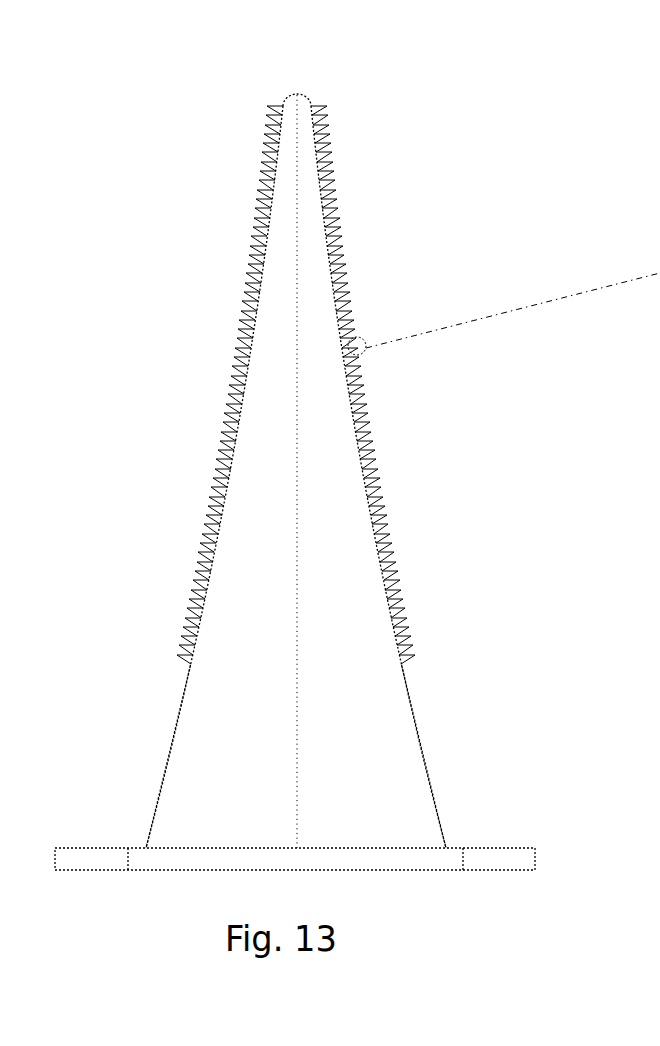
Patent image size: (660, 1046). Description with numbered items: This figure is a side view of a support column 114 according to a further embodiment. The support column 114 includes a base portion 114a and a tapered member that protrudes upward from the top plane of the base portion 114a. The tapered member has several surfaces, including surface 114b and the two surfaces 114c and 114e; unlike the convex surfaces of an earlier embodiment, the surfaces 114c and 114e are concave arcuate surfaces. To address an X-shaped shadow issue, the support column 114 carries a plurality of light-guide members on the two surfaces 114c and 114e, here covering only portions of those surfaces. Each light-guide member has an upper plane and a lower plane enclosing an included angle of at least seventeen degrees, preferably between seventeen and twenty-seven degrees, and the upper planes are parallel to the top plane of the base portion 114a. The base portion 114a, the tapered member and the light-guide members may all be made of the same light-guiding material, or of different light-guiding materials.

The support column 114 is at (206, 112).
The base portion 114a is at (530, 853).
The surface 114b is at (358, 565).
The surface 114c is at (168, 752).
The surface 114e is at (422, 750).